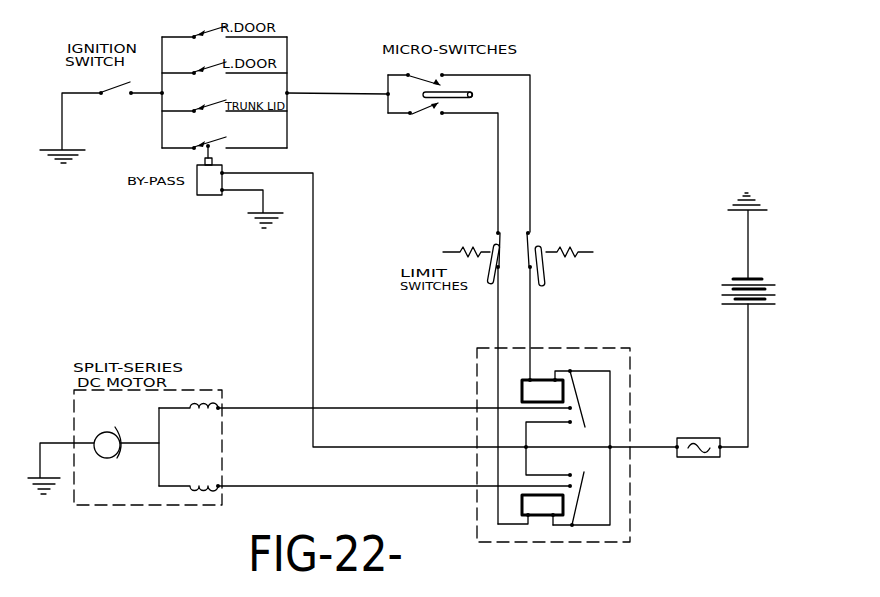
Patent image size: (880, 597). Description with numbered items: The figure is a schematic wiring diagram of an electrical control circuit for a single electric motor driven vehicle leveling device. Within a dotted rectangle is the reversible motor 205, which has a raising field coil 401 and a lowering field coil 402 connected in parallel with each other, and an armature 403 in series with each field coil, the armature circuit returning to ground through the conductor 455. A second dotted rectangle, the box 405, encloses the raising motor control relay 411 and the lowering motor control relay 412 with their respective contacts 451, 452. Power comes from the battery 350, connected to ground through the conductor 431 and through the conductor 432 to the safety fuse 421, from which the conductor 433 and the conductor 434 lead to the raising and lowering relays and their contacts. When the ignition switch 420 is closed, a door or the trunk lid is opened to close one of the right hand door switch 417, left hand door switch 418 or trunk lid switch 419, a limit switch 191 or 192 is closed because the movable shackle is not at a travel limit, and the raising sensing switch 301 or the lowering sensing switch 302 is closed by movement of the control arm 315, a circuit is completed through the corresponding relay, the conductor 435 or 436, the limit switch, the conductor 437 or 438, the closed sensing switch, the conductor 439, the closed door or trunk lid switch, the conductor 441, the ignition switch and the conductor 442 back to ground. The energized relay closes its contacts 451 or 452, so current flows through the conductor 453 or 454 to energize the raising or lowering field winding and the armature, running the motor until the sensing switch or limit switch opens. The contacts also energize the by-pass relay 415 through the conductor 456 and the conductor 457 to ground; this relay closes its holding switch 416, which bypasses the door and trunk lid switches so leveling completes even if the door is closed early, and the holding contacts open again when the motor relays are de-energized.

The right hand door switch 417 is at (201, 26).
The left hand door switch 418 is at (205, 64).
The trunk lid switch 419 is at (205, 101).
The holding switch 416 is at (205, 138).
The conductor 442 is at (79, 93).
The ignition switch 420 is at (125, 77).
The conductor 441 is at (152, 97).
The conductor 439 is at (317, 95).
The lowering sensing switch 302 is at (430, 74).
The raising sensing switch 301 is at (428, 116).
The control arm 315 is at (474, 97).
The conductor 437 is at (498, 167).
The conductor 438 is at (530, 163).
The limit switch 191 is at (492, 238).
The limit switch 192 is at (540, 237).
The conductor 435 is at (498, 322).
The conductor 436 is at (530, 313).
The lowering motor control relay 412 is at (522, 381).
The raising motor control relay 411 is at (522, 503).
The contacts 452 is at (581, 385).
The contacts 451 is at (583, 508).
The conductor 434 is at (610, 399).
The conductor 433 is at (610, 478).
The box 405 is at (620, 542).
The conductor 454 is at (348, 408).
The conductor 453 is at (370, 486).
The conductor 456 is at (313, 266).
The by-pass relay 415 is at (200, 197).
The conductor 457 is at (260, 202).
The reversible motor 205 is at (154, 507).
The conductor 455 is at (70, 443).
The armature 403 is at (105, 458).
The lowering field coil 402 is at (210, 417).
The raising field coil 401 is at (210, 478).
The safety fuse 421 is at (697, 457).
The conductor 432 is at (748, 365).
The battery 350 is at (738, 303).
The conductor 431 is at (748, 242).